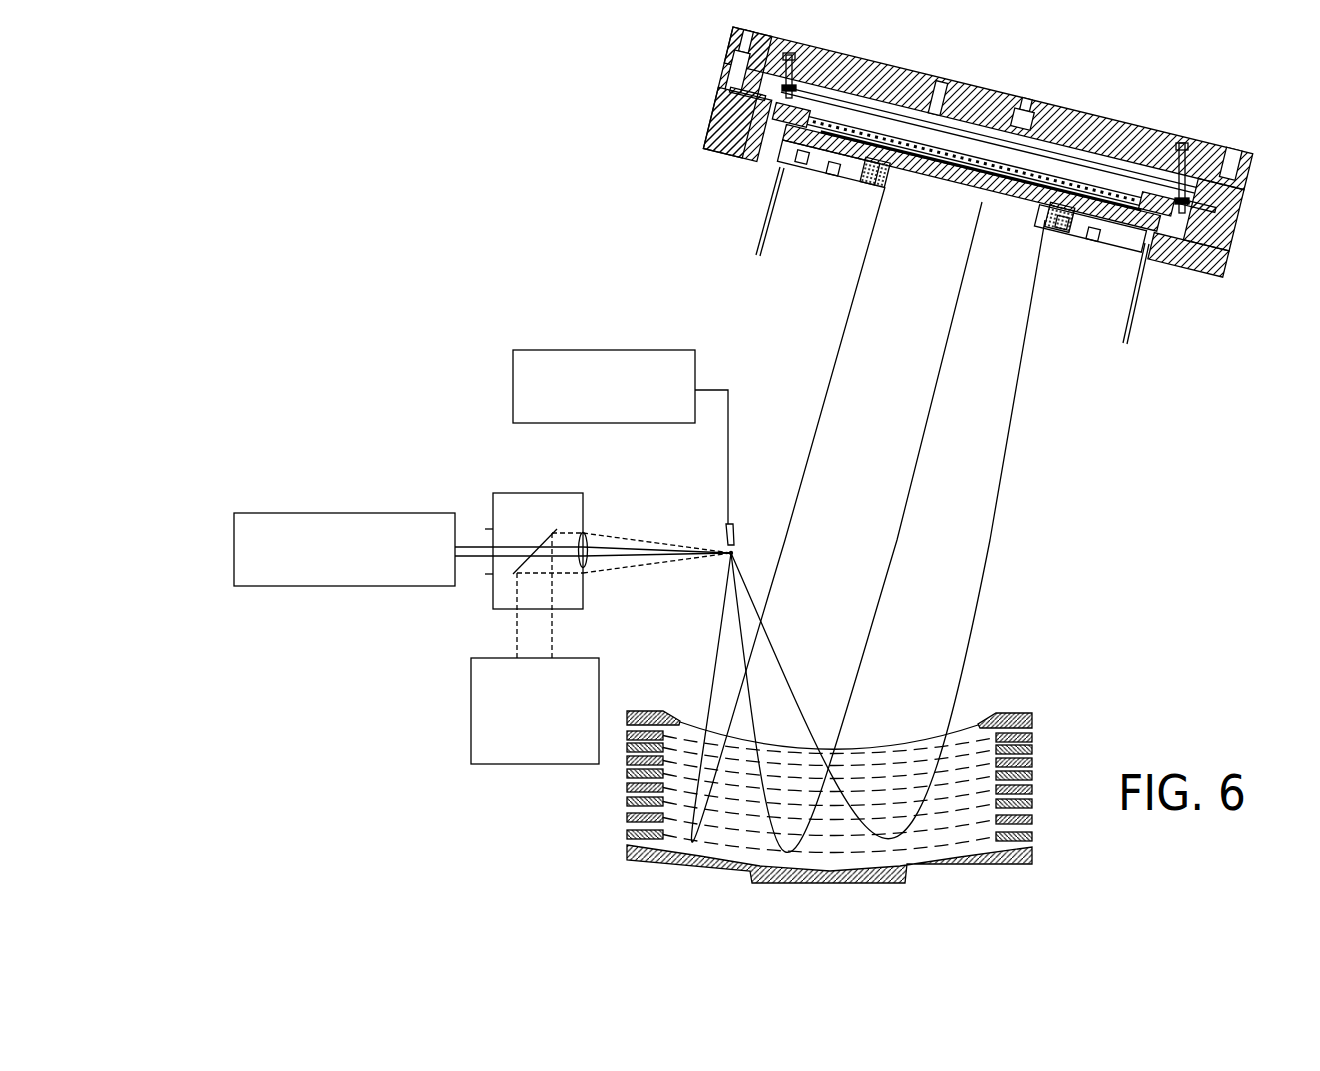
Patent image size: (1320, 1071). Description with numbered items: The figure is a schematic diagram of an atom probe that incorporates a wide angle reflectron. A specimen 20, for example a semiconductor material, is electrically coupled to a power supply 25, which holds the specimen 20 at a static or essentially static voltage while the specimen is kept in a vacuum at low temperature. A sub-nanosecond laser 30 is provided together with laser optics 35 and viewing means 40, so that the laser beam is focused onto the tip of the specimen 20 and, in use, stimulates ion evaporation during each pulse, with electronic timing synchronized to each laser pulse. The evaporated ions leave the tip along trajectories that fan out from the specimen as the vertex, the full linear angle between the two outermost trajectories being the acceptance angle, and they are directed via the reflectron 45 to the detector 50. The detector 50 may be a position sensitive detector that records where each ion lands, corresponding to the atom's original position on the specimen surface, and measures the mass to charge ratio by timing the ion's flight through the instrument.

The specimen 20 is at (727, 526).
The power supply 25 is at (513, 350).
The sub-nanosecond laser 30 is at (236, 513).
The laser optics 35 is at (494, 494).
The viewing means 40 is at (471, 764).
The reflectron 45 is at (1039, 709).
The detector 50 is at (1261, 148).